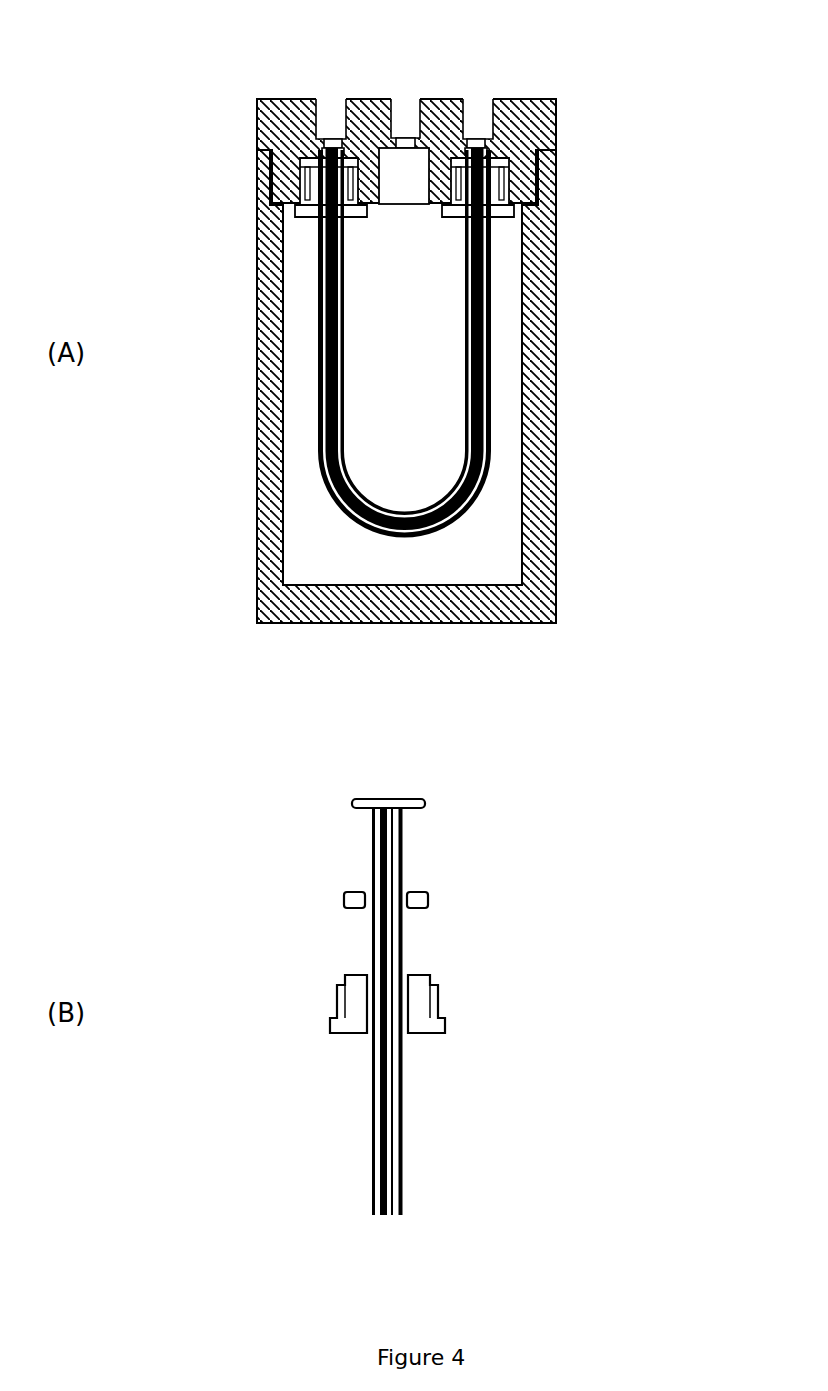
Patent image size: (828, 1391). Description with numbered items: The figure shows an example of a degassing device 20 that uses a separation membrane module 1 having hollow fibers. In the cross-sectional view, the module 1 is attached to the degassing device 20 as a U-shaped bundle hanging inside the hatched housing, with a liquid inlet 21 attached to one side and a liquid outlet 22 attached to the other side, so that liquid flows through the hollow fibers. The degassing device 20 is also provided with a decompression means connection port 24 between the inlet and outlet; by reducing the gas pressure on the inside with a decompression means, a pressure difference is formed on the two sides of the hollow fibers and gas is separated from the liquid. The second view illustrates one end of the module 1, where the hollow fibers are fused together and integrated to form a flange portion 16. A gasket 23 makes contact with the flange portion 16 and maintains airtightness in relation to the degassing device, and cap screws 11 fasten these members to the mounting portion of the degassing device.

The degassing device 20 is at (152, 58).
The liquid inlet 21 is at (330, 114).
The liquid outlet 22 is at (478, 114).
The decompression means connection port 24 is at (404, 114).
The separation membrane module having hollow fibers 1 is at (493, 342).
The flange portion 16 is at (414, 803).
The gasket 23 is at (428, 893).
The cap screws 11 is at (418, 1002).